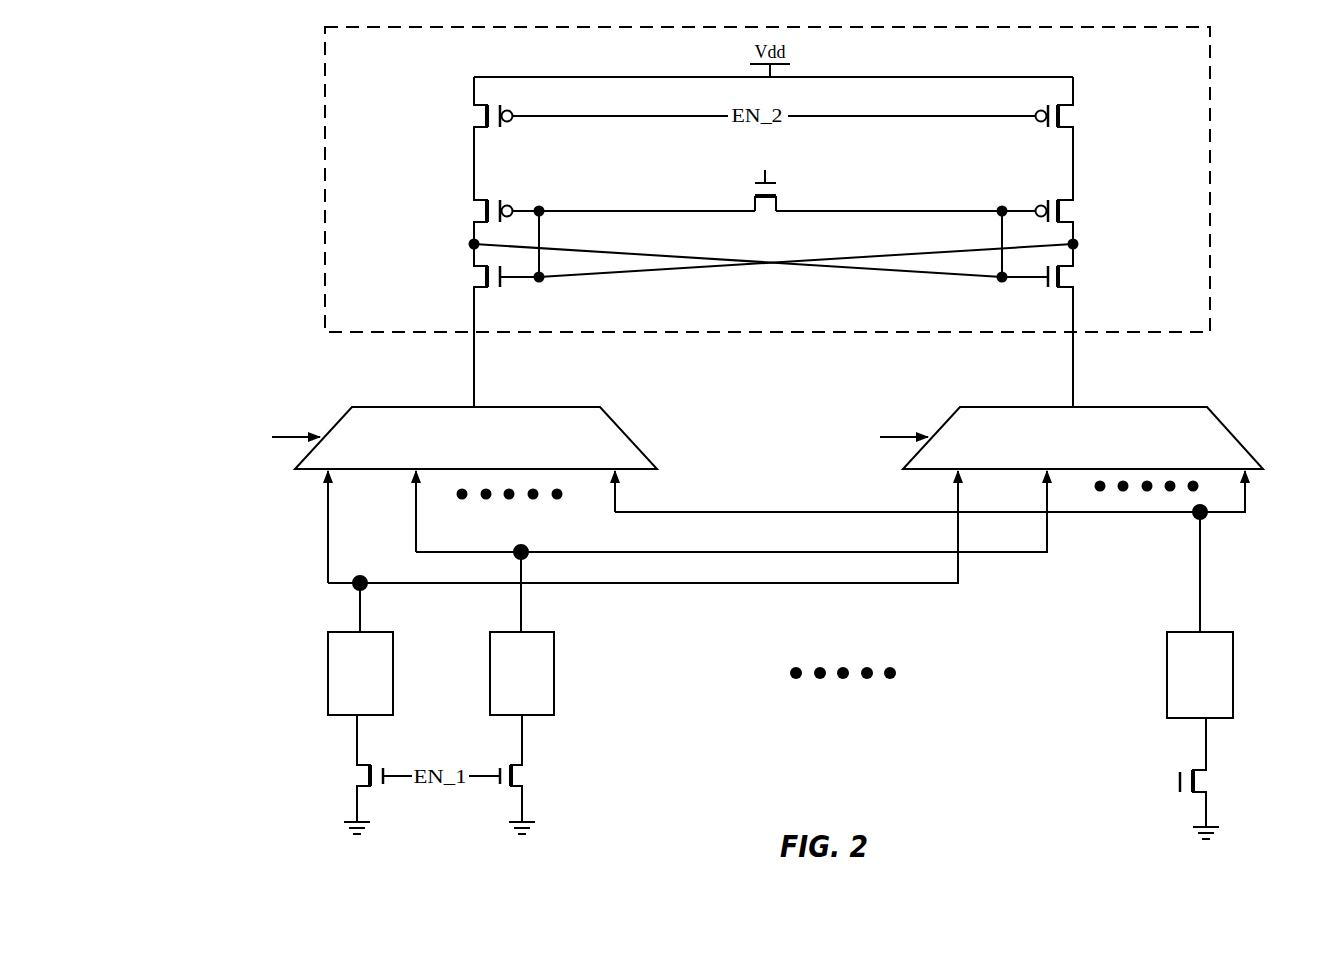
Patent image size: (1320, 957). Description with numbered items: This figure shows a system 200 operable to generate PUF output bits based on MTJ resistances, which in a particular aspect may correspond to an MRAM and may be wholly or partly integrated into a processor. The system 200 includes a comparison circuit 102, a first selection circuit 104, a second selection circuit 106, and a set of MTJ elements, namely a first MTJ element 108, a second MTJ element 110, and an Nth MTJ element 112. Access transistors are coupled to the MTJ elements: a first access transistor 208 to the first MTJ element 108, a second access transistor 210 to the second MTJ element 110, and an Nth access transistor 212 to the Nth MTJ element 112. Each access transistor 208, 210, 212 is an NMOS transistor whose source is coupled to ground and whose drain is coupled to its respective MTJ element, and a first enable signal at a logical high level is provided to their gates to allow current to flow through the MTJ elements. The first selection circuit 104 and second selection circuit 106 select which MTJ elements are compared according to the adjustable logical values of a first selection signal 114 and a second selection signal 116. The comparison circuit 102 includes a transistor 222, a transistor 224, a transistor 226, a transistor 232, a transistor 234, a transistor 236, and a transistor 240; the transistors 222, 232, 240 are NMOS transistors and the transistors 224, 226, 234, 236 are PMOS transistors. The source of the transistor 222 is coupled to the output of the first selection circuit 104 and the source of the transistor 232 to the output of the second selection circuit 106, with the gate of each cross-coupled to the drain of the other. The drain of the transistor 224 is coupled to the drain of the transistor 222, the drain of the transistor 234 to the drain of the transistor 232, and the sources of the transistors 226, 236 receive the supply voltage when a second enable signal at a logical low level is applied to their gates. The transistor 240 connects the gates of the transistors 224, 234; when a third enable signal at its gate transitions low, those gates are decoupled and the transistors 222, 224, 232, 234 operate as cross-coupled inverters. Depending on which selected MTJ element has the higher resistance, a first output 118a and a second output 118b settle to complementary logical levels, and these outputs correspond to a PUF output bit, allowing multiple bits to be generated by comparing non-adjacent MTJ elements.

The system 200 is at (251, 150).
The comparison circuit 102 is at (1212, 171).
The first selection circuit 104 is at (540, 407).
The second selection circuit 106 is at (1152, 407).
The first MTJ element 108 is at (329, 656).
The second MTJ element 110 is at (490, 656).
The Nth MTJ element 112 is at (1168, 656).
The first selection signal 114 is at (230, 410).
The second selection signal 116 is at (827, 410).
The first output 118a is at (473, 244).
The second output 118b is at (1074, 244).
The first access transistor 208 is at (349, 777).
The second access transistor 210 is at (548, 779).
The Nth access transistor 212 is at (1221, 781).
The transistor 222 is at (469, 276).
The transistor 224 is at (469, 210).
The transistor 226 is at (469, 115).
The transistor 232 is at (1080, 277).
The transistor 234 is at (1080, 210).
The transistor 236 is at (1080, 115).
The transistor 240 is at (744, 195).